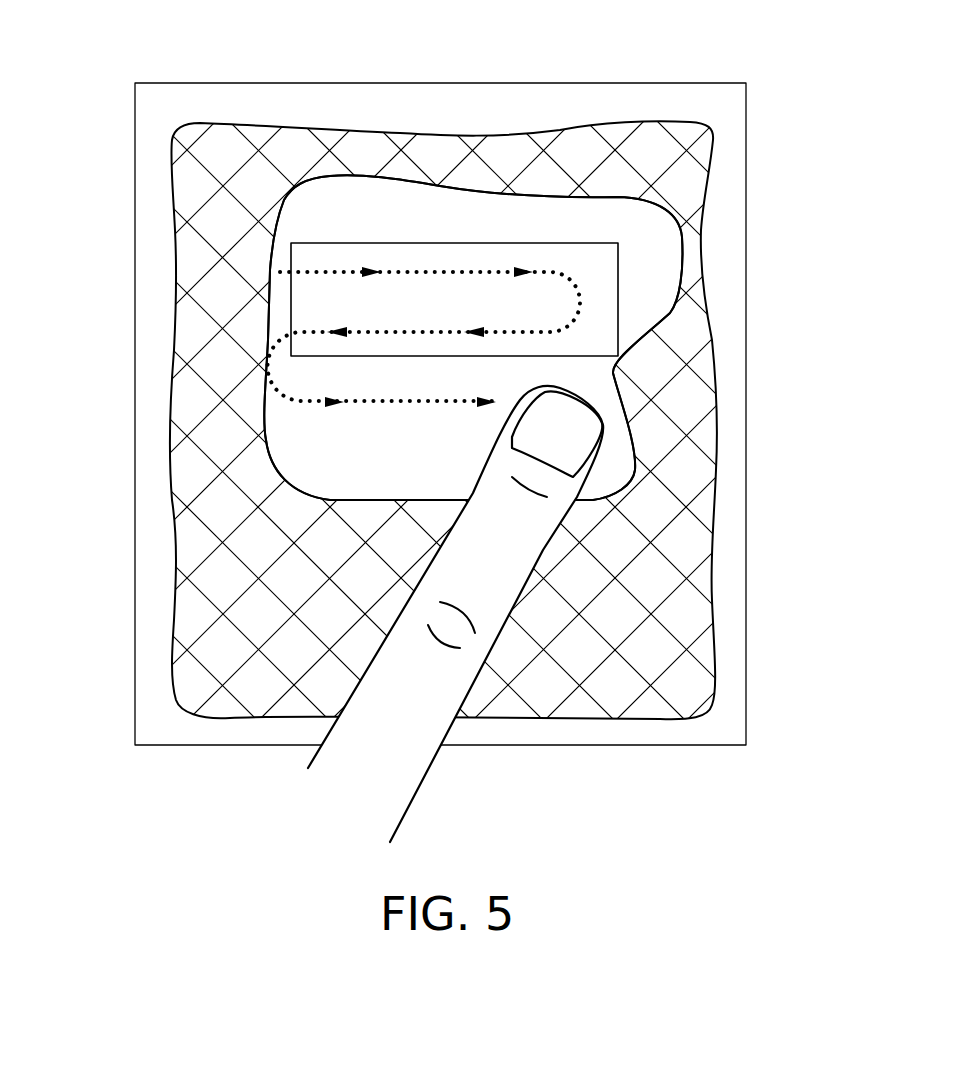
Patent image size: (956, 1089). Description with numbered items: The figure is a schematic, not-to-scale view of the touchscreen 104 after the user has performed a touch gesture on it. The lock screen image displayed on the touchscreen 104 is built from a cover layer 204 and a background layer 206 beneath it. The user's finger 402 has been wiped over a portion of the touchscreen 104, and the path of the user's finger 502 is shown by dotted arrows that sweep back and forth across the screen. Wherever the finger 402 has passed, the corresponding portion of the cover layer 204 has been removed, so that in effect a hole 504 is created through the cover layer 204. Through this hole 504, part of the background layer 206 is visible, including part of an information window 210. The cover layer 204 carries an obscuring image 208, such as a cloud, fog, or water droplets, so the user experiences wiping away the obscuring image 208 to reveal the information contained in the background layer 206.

The touchscreen 104 is at (692, 82).
The cover layer 204 is at (715, 227).
The background layer 206 is at (320, 212).
The obscuring image 208 is at (692, 315).
The information window 210 is at (438, 240).
The user's finger 402 is at (387, 652).
The path of the user's finger 502 is at (387, 330).
The hole 504 is at (340, 175).